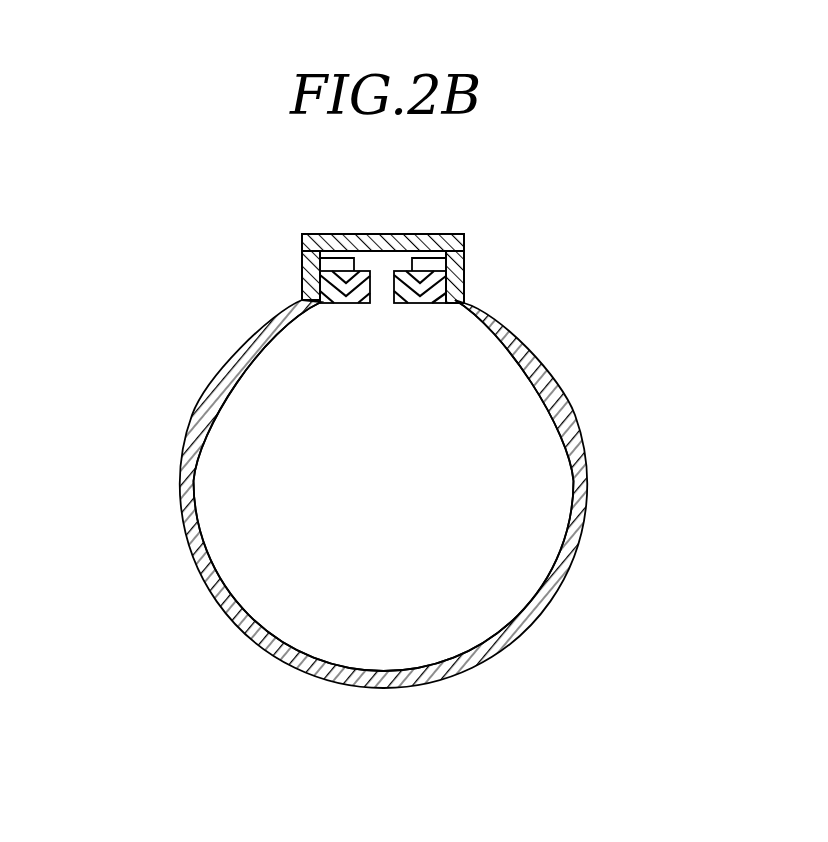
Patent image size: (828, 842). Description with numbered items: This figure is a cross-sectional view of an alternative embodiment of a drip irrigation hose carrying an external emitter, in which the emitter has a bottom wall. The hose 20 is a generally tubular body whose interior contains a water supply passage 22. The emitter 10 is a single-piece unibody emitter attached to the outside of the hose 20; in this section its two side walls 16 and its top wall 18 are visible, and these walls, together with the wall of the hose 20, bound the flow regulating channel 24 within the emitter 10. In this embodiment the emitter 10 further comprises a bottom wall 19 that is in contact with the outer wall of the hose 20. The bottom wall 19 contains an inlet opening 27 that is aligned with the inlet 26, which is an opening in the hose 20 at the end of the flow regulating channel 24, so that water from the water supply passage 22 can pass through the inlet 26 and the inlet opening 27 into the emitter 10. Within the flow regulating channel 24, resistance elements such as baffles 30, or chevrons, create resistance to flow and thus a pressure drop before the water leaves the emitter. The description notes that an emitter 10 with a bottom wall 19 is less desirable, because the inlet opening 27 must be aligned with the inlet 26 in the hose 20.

The emitter 10 is at (377, 247).
The side walls 16 is at (315, 240).
The top wall 18 is at (416, 243).
The bottom wall 19 is at (457, 292).
The drip irrigation hose 20 is at (555, 398).
The water supply passage 22 is at (485, 573).
The flow regulating channel 24 is at (396, 258).
The inlet 26 is at (382, 272).
The inlet opening 27 is at (357, 237).
The baffles 30 is at (318, 266).